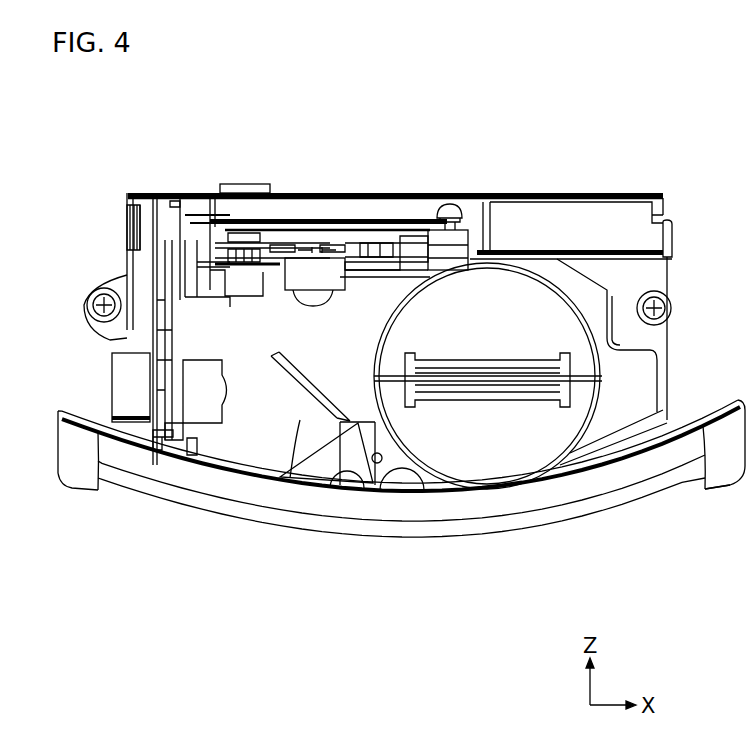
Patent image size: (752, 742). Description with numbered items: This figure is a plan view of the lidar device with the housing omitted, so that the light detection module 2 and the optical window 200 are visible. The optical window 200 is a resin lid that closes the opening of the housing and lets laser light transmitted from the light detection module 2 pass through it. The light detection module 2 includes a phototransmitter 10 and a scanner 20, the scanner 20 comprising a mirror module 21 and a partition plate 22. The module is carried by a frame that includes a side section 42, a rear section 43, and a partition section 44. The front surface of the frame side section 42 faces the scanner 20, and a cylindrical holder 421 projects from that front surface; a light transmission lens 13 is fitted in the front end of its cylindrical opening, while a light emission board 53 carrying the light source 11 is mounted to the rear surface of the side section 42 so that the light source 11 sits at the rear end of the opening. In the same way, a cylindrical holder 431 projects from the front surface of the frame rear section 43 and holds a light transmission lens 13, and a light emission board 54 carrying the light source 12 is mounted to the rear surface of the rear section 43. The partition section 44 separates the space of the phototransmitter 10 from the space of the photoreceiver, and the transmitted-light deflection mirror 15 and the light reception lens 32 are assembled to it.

The light detection module 2 is at (588, 93).
The phototransmitter 10 is at (240, 447).
The light source 11 is at (153, 402).
The light source 12 is at (320, 245).
The light transmission lens 13 is at (283, 309).
The transmitted-light deflection mirror 15 is at (308, 397).
The scanner 20 is at (486, 447).
The mirror module 21 is at (580, 378).
The partition plate 22 is at (528, 317).
The light reception lens 32 is at (368, 440).
The frame side section 42 is at (175, 343).
The frame rear section 43 is at (460, 238).
The partition section 44 is at (283, 455).
The light emission board 53 is at (128, 268).
The light emission board 54 is at (343, 275).
The optical window 200 is at (613, 482).
The cylindrical holder 421 is at (200, 398).
The cylindrical holder 431 is at (356, 282).